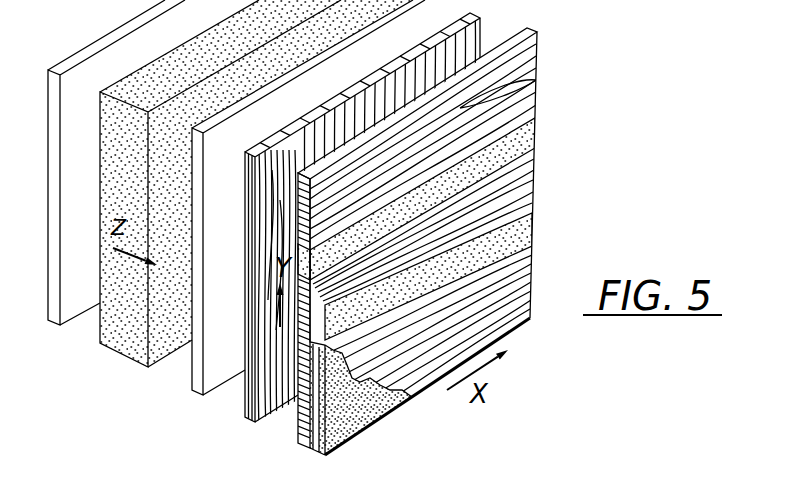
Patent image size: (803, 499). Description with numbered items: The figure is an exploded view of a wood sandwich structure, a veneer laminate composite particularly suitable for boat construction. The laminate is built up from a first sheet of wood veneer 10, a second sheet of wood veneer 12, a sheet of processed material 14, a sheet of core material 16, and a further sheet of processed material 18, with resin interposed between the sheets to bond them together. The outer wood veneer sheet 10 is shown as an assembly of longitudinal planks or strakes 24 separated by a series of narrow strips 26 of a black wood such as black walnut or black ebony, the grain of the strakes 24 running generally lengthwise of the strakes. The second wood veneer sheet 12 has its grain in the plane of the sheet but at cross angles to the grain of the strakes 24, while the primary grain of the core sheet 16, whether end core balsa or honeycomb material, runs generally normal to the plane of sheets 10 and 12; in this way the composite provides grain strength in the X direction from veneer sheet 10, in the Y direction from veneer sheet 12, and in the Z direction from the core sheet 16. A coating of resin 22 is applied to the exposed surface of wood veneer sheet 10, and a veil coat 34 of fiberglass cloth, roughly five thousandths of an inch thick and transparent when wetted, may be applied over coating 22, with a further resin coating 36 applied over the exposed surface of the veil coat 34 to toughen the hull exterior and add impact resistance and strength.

The first sheet of wood veneer 10 is at (424, 263).
The second sheet of wood veneer 12 is at (245, 398).
The sheet of processed material 14 is at (184, 376).
The sheet of core material 16 is at (120, 342).
The further sheet of processed material 18 is at (47, 296).
The coating of resin 22 is at (300, 444).
The strakes 24 is at (457, 156).
The narrow strips 26 is at (537, 123).
The veil coat 34 is at (313, 447).
The further resin coating 36 is at (372, 422).